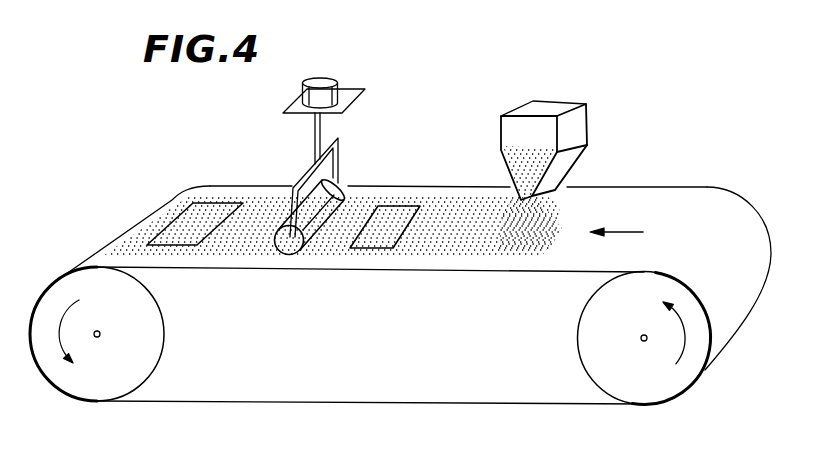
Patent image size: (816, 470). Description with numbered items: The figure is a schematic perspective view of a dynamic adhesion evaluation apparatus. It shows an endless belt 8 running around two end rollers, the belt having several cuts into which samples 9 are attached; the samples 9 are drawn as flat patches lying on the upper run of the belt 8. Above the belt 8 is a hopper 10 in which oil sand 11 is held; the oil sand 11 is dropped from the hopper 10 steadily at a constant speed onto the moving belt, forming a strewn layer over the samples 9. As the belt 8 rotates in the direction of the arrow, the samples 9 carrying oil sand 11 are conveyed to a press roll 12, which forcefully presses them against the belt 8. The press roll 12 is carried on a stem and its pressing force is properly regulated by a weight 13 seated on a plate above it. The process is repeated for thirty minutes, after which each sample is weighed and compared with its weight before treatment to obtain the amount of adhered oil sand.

The endless belt 8 is at (352, 403).
The samples 9 is at (220, 202).
The hopper 10 is at (588, 123).
The oil sand 11 is at (520, 171).
The press roll 12 is at (342, 186).
The weight 13 is at (342, 80).